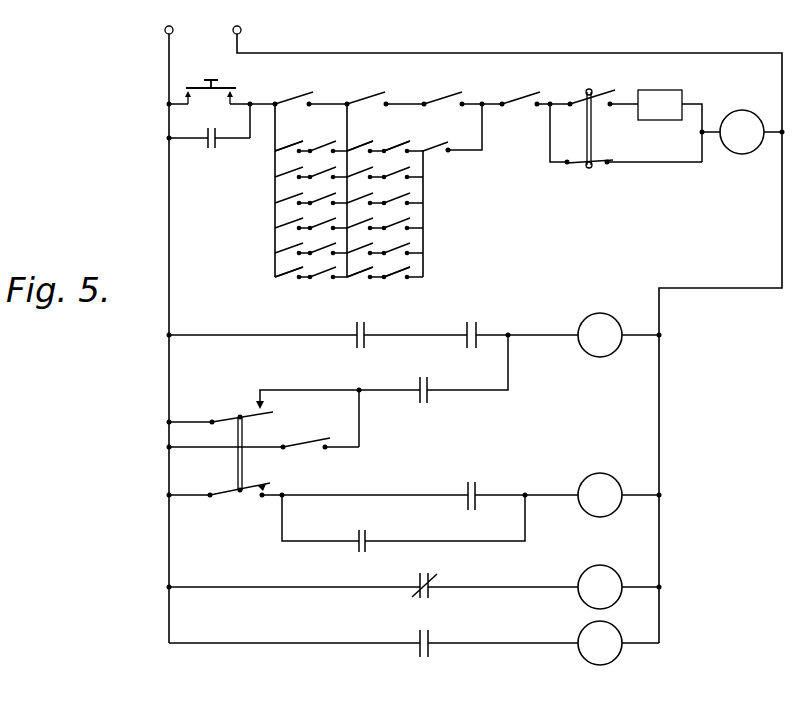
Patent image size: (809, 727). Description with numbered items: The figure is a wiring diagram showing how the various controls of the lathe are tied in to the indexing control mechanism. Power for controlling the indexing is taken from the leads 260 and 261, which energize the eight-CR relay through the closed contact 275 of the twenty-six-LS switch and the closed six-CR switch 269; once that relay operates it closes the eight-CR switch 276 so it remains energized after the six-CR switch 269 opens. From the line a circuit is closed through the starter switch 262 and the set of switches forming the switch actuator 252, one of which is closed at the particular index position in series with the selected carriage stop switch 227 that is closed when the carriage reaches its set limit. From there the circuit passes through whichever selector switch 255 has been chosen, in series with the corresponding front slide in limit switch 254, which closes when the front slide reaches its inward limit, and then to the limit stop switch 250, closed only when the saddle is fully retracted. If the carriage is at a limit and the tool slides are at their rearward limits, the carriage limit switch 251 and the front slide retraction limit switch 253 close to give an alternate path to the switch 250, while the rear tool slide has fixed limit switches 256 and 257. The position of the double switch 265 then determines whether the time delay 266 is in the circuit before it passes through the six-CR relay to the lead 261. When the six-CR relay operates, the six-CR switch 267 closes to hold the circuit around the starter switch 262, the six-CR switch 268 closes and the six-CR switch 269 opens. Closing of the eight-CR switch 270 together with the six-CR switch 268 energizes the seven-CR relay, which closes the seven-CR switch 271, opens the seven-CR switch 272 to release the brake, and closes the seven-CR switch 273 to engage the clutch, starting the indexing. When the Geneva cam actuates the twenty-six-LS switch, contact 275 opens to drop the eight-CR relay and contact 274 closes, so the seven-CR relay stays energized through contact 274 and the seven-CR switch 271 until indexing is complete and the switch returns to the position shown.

The lead 260 is at (167, 64).
The lead 261 is at (262, 53).
The starter switch 262 is at (220, 62).
The 6CR switch 267 is at (222, 122).
The carriage limit switch 251 is at (301, 86).
The front tool slide retraction limit switch 253 is at (371, 84).
The rear tool slide front limit switch 256 is at (452, 84).
The limit stop switch 250 is at (531, 78).
The double switch 265 is at (608, 78).
The time delay 266 is at (682, 80).
The rear tool slide rear limit switch 257 is at (441, 158).
The switch actuator 252 is at (278, 252).
The carriage limit switches 227 is at (318, 170).
The selector switch 255 is at (372, 170).
The front tool slide in limit switches 254 is at (424, 170).
The 6CR switch 268 is at (355, 344).
The 8CR switch 270 is at (478, 333).
The 7CR switch 271 is at (427, 405).
The contact of switch 26LS 274 is at (218, 427).
The closed contact of switch 26LS 275 is at (226, 500).
The 8CR switch 276 is at (462, 507).
The 6CR switch 269 is at (355, 548).
The 7CR switch 272 is at (430, 592).
The 7CR switch 273 is at (432, 650).